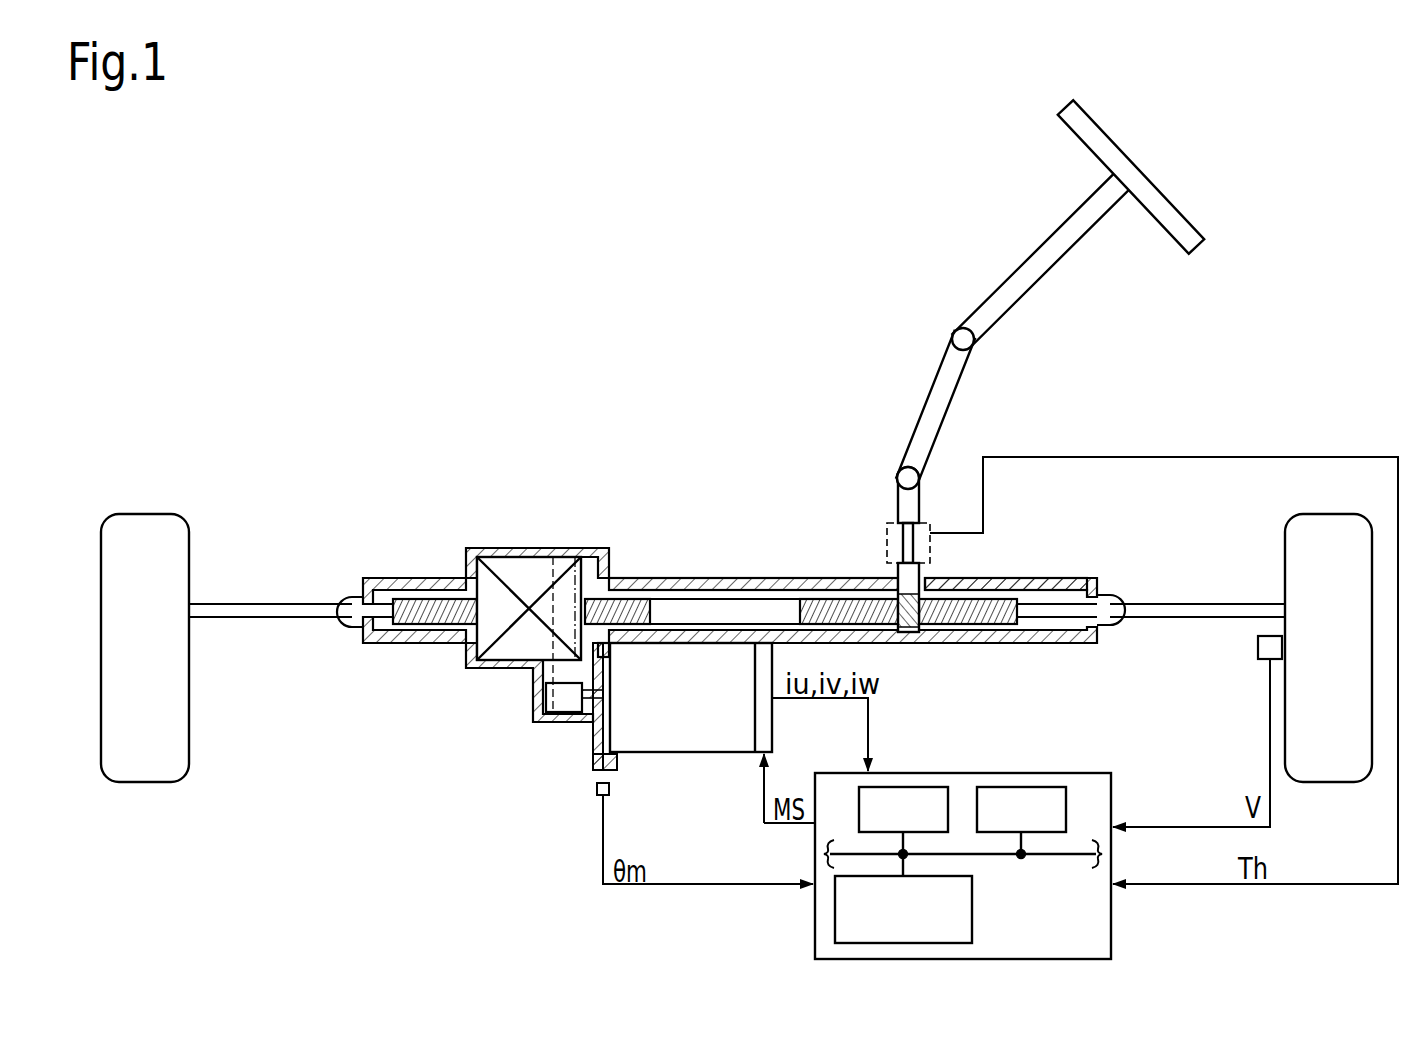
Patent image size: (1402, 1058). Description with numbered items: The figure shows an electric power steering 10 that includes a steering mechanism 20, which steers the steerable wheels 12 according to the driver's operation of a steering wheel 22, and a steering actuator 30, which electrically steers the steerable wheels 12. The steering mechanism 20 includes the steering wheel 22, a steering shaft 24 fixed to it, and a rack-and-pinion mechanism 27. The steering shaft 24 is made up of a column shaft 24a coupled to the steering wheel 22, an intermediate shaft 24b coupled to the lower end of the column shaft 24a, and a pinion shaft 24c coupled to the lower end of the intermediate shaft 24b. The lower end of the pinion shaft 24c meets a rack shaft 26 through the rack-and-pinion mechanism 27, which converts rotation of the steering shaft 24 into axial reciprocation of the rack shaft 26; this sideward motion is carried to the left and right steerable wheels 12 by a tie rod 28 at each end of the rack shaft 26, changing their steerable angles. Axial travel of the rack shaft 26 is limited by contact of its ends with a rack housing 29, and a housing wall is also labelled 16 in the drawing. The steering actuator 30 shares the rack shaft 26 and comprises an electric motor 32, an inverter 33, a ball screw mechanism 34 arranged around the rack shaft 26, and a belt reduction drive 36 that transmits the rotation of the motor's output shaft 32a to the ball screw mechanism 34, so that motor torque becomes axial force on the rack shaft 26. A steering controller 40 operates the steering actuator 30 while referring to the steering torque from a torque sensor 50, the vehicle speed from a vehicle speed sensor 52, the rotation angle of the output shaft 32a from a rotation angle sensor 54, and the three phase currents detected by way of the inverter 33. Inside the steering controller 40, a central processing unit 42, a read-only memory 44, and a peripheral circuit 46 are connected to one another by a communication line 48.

The electric power steering 10 is at (1292, 170).
The steerable wheels 12 is at (142, 518).
The housing 16 is at (1002, 643).
The steering mechanism 20 is at (622, 287).
The steering wheel 22 is at (1165, 196).
The steering shaft 24 is at (967, 401).
The column shaft 24a is at (1040, 254).
The intermediate shaft 24b is at (935, 400).
The pinion shaft 24c is at (866, 547).
The rack shaft 26 is at (1052, 613).
The rack-and-pinion mechanism 27 is at (931, 657).
The tie rod 28 is at (1155, 618).
The rack housing 29 is at (1059, 578).
The steering actuator 30 is at (470, 497).
The electric motor 32 is at (653, 752).
The output shaft 32a is at (589, 718).
The inverter 33 is at (767, 733).
The ball screw mechanism 34 is at (483, 621).
The belt reduction drive 36 is at (522, 697).
The steering controller 40 is at (980, 846).
The CPU 42 is at (902, 787).
The ROM 44 is at (1019, 787).
The peripheral circuit 46 is at (973, 912).
The communication line 48 is at (1055, 862).
The torque sensor 50 is at (926, 522).
The vehicle speed sensor 52 is at (1258, 649).
The rotation angle sensor 54 is at (596, 790).